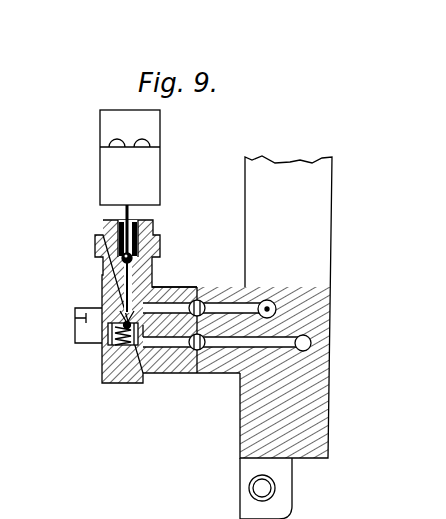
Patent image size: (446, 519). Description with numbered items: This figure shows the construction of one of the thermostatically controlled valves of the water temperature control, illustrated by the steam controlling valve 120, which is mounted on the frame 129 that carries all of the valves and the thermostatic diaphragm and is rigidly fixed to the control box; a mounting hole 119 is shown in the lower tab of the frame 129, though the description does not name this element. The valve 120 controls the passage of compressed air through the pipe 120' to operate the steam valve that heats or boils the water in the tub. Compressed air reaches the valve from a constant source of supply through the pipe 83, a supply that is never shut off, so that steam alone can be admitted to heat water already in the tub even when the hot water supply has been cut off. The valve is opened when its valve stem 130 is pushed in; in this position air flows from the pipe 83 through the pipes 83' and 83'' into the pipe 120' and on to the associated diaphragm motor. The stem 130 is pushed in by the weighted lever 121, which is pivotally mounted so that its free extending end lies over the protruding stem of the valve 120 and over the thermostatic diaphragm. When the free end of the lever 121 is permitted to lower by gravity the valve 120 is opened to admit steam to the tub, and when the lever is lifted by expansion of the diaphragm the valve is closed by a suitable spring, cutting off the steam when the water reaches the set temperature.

The weighted lever 121 is at (115, 168).
The thermostatically controlled valve 120 is at (83, 291).
The pipe 120' is at (233, 276).
The valve stem 130 is at (102, 302).
The pipe 83 is at (227, 307).
The pipe 83' is at (146, 385).
The pipe 83'' is at (175, 253).
The frame 129 is at (250, 410).
The mounting bolt hole 119 is at (248, 483).